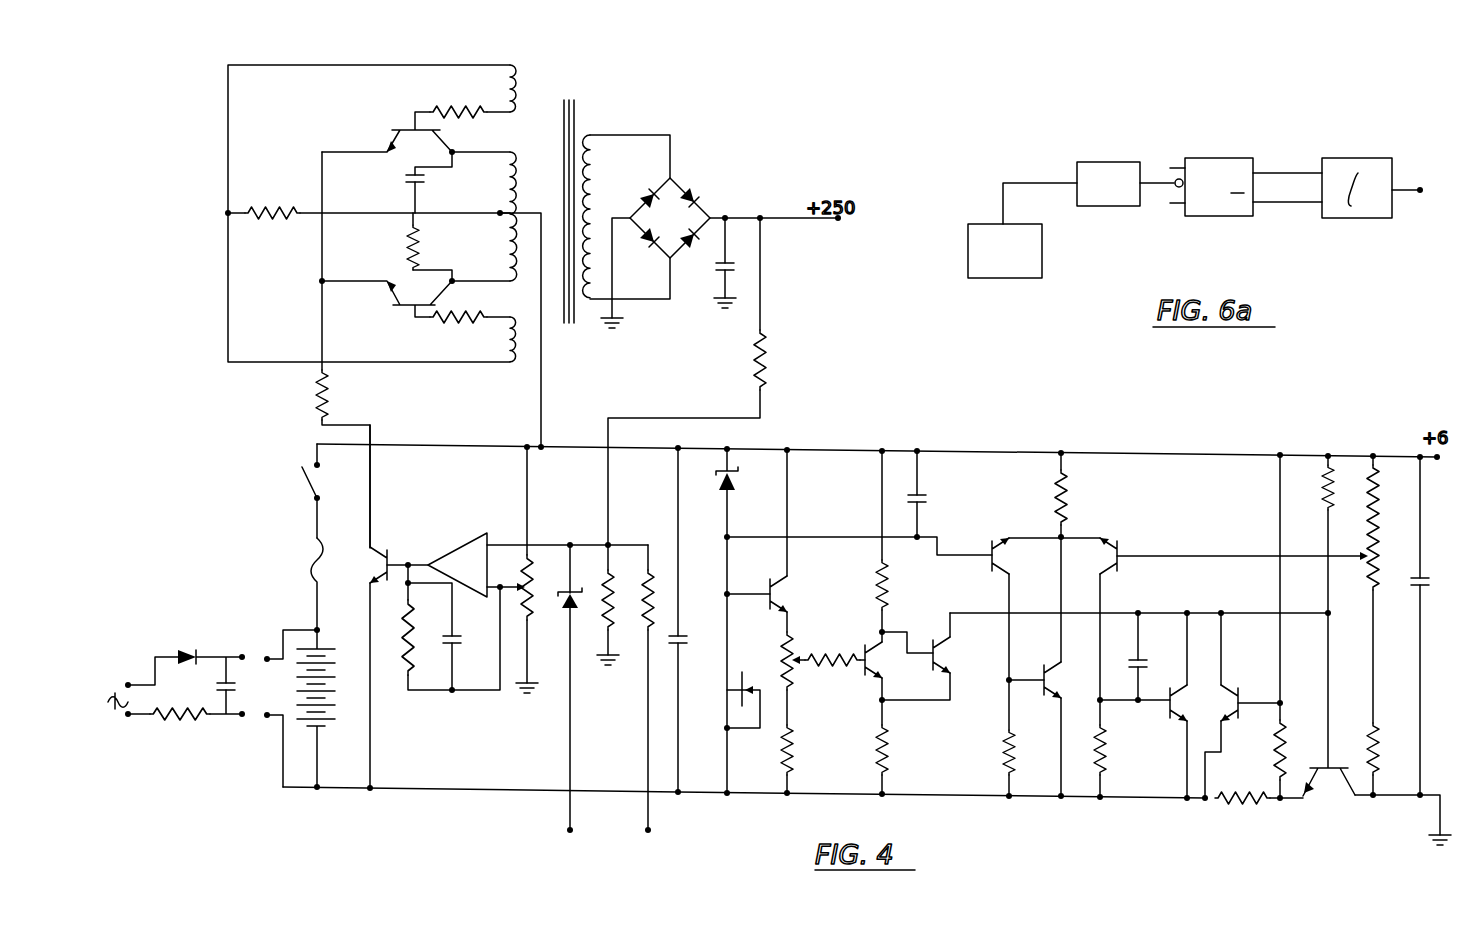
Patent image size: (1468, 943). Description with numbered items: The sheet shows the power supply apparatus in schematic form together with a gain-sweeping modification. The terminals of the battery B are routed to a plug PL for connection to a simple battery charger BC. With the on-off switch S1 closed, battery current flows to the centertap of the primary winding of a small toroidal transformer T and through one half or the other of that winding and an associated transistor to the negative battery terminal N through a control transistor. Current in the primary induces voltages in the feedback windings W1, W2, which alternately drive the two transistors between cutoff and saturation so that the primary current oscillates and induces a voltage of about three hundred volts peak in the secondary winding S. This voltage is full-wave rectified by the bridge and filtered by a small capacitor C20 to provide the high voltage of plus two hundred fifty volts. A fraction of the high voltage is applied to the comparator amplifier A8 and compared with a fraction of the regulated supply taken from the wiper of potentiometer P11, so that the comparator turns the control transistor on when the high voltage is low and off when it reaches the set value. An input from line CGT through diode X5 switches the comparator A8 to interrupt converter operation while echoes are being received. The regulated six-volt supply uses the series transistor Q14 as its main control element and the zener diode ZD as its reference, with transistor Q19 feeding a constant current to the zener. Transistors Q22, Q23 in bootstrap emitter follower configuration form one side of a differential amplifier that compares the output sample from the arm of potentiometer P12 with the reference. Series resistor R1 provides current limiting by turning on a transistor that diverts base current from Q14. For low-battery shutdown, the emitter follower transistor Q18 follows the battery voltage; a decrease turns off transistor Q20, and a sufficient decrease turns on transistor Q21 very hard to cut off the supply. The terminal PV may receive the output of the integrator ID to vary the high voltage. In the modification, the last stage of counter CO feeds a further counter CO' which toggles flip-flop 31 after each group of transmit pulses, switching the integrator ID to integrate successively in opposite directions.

In FIG. 4, the feedback winding W1 is at (502, 76).
In FIG. 4, the feedback winding W2 is at (502, 356).
In FIG. 4, the toroidal transformer T is at (566, 198).
In FIG. 4, the secondary winding S is at (592, 133).
In FIG. 4, the capacitor C20 is at (703, 263).
In FIG. 4, the on-off switch S1 is at (293, 491).
In FIG. 4, the comparator amplifier A8 is at (538, 565).
In FIG. 4, the potentiometer P11 is at (531, 570).
In FIG. 4, the diode X5 is at (568, 614).
In FIG. 4, the plug PL is at (281, 707).
In FIG. 4, the battery charger BC is at (176, 685).
In FIG. 4, the battery B is at (307, 708).
In FIG. 4, the battery terminal N is at (325, 777).
In FIG. 4, the line CGT is at (562, 845).
In FIG. 4, the terminal PV is at (644, 704).
In FIG. 4, the zener diode ZD is at (740, 493).
In FIG. 4, the emitter follower transistor Q18 is at (771, 541).
In FIG. 4, the transistor Q19 is at (726, 701).
In FIG. 4, the transistor Q20 is at (846, 713).
In FIG. 4, the transistor Q21 is at (958, 643).
In FIG. 4, the transistor Q22 is at (1046, 667).
In FIG. 4, the transistor Q23 is at (1048, 729).
In FIG. 4, the potentiometer P12 is at (1355, 625).
In FIG. 4, the series resistor R1 is at (1259, 814).
In FIG. 4, the series transistor Q14 is at (1329, 672).
In FIG. 6A, the counter CO is at (1035, 251).
In FIG. 6A, the further counter CO' is at (1108, 159).
In FIG. 6A, the flip-flop 31 is at (1203, 158).
In FIG. 6A, the analog integrator ID is at (1360, 158).